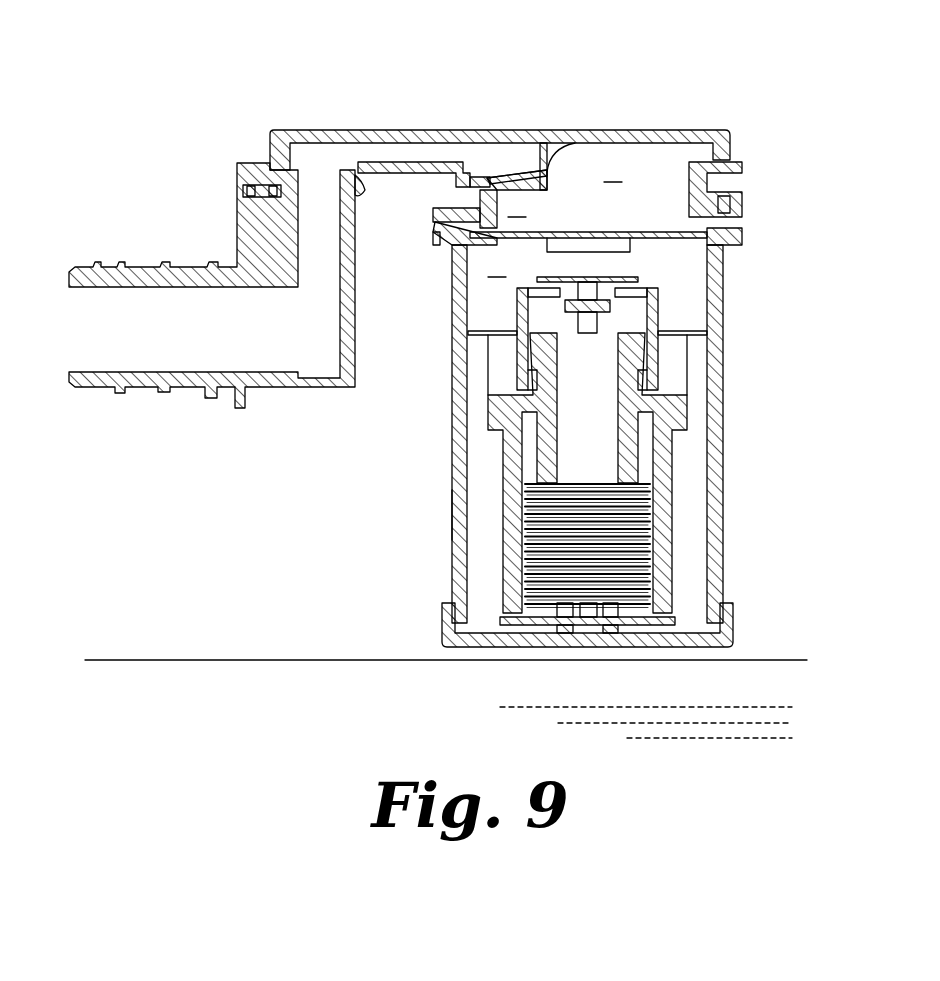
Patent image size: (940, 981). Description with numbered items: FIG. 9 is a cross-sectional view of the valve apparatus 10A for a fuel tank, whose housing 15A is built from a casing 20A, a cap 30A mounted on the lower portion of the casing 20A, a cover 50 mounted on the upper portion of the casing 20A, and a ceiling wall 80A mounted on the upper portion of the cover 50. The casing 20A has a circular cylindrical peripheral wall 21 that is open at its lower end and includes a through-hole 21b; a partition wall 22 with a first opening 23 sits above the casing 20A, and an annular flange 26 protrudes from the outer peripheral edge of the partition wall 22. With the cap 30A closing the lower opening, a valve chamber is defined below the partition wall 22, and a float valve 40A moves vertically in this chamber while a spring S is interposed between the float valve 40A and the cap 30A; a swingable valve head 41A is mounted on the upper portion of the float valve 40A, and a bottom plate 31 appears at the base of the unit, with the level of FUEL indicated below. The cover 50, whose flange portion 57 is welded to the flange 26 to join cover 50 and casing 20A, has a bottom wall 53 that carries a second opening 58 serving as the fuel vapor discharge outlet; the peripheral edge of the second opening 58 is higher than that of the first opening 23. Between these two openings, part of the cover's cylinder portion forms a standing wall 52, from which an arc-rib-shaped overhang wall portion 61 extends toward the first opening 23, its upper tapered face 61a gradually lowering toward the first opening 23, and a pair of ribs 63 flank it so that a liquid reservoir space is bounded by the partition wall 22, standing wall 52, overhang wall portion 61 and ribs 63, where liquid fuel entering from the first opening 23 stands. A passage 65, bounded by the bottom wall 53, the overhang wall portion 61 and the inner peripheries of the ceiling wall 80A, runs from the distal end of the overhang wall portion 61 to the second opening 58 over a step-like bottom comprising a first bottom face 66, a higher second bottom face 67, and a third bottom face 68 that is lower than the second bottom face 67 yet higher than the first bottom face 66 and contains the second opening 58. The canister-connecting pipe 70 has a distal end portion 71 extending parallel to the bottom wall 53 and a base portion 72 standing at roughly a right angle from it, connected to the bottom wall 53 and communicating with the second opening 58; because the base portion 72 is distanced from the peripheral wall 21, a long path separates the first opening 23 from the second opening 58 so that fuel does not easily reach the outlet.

The valve apparatus 10A is at (623, 126).
The housing 15A is at (866, 160).
The casing 20A is at (624, 415).
The peripheral wall 21 is at (587, 434).
The through-hole 21b is at (455, 519).
The partition wall 22 is at (620, 235).
The first opening 23 is at (604, 248).
The flange 26 is at (446, 240).
The cap 30A is at (648, 630).
The bottom plate 31 is at (513, 630).
The float valve 40A is at (690, 416).
The valve head 41A is at (659, 306).
The cover 50 is at (748, 213).
The standing wall 52 is at (487, 172).
The bottom wall 53 is at (383, 156).
The flange portion 57 is at (437, 221).
The second opening 58 is at (318, 172).
The overhang wall portion 61 is at (501, 170).
The tapered face 61a is at (509, 172).
The rib 63 is at (558, 170).
The passage 65 is at (395, 147).
The first bottom face 66 is at (482, 183).
The second bottom face 67 is at (402, 174).
The third bottom face 68 is at (362, 188).
The canister-connecting pipe 70 is at (212, 290).
The distal end portion 71 is at (195, 393).
The base portion 72 is at (317, 427).
The ceiling wall 80A is at (726, 143).
The spring S is at (640, 511).
The fuel level FUEL is at (158, 658).